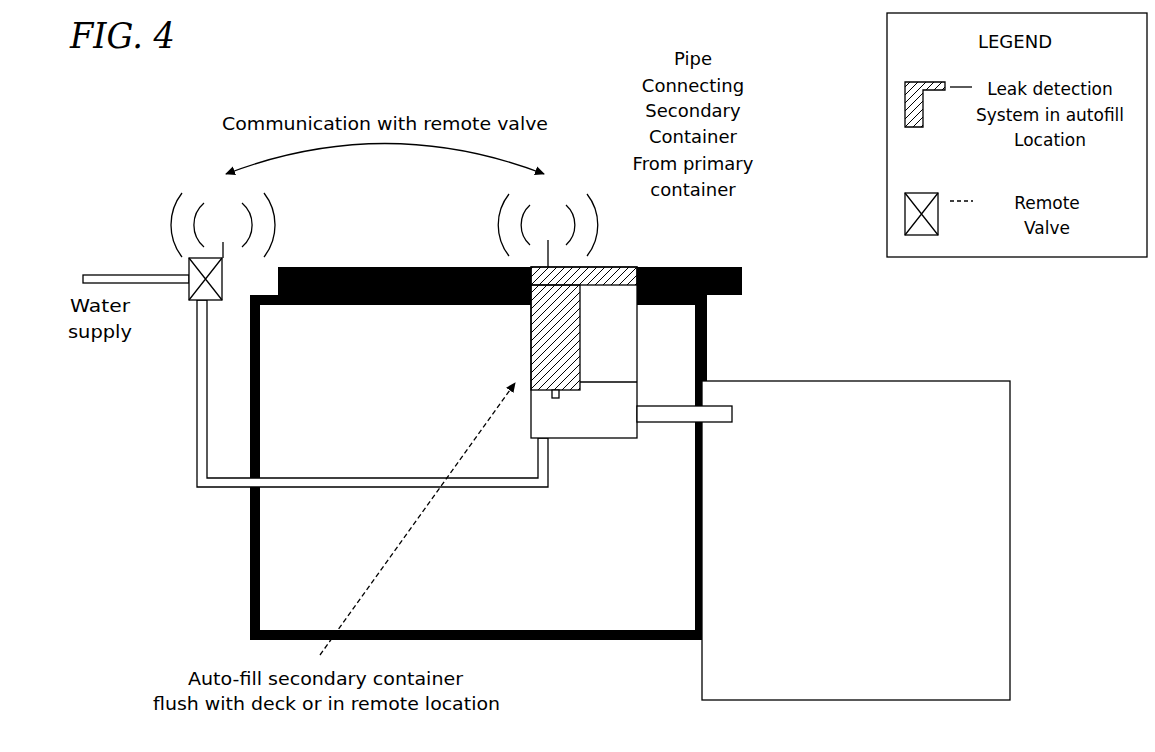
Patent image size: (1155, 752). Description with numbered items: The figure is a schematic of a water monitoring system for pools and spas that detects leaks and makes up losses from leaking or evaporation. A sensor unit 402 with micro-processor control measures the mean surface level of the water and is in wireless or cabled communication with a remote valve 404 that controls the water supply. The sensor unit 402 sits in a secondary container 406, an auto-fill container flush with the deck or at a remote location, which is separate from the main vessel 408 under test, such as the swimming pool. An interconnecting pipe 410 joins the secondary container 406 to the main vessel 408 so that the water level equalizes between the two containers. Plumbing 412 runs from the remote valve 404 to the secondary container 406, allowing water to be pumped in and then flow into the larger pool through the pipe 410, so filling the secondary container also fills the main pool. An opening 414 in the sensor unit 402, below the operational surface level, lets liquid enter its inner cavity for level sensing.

The sensor unit 402 is at (526, 350).
The remote valve 404 is at (189, 268).
The secondary container 406 is at (624, 360).
The main vessel 408 is at (786, 465).
The interconnecting pipe 410 is at (663, 396).
The plumbing 412 is at (480, 489).
The opening 414 is at (558, 400).